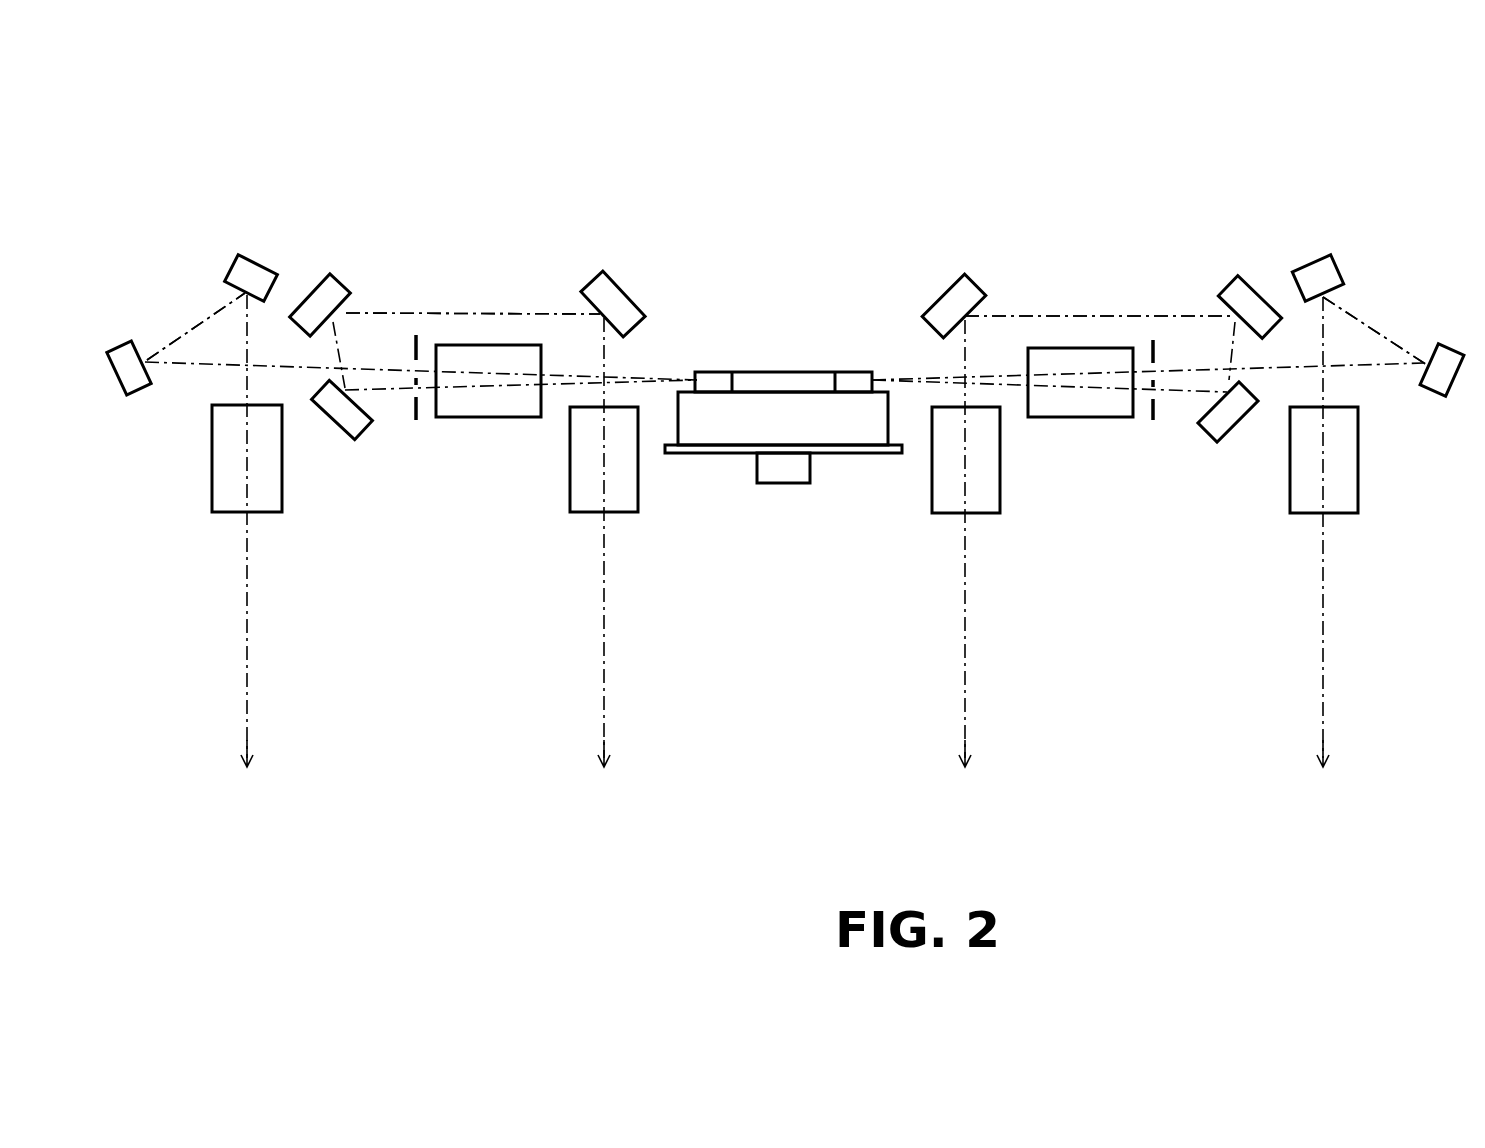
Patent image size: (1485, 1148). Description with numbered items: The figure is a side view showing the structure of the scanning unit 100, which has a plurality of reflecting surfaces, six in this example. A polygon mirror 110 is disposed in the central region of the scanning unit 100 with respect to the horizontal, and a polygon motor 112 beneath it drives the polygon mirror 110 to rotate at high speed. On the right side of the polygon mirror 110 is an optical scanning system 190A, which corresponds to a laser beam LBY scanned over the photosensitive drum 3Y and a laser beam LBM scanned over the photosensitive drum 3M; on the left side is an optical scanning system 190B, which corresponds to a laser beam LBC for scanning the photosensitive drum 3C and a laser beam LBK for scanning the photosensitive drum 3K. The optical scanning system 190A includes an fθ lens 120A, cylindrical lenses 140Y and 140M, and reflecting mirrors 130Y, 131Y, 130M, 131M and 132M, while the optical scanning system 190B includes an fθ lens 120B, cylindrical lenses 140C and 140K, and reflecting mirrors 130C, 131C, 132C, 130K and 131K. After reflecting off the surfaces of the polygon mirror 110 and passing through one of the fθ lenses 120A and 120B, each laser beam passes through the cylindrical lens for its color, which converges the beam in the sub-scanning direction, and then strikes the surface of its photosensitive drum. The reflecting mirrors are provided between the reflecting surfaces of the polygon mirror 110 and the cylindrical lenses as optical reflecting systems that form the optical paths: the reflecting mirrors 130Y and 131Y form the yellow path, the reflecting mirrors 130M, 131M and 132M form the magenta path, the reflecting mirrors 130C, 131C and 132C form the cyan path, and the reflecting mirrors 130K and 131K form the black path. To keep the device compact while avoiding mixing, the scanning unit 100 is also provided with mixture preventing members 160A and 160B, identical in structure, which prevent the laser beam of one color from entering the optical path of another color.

The scanning unit 100 is at (785, 182).
The polygon mirror 110 is at (820, 370).
The polygon motor 112 is at (840, 455).
The fθ lens 120A is at (1100, 405).
The fθ lens 120B is at (489, 405).
The reflecting mirror 130K is at (135, 377).
The reflecting mirror 130C is at (335, 410).
The reflecting mirror 130M is at (1225, 420).
The reflecting mirror 130Y is at (1432, 383).
The reflecting mirror 131K is at (278, 230).
The reflecting mirror 131C is at (330, 295).
The reflecting mirror 131M is at (1240, 297).
The reflecting mirror 131Y is at (1320, 275).
The reflecting mirror 132C is at (615, 298).
The reflecting mirror 132M is at (952, 300).
The cylindrical lens 140K is at (263, 500).
The cylindrical lens 140C is at (620, 500).
The cylindrical lens 140M is at (982, 500).
The cylindrical lens 140Y is at (1340, 500).
The mixture preventing member 160A is at (1160, 340).
The mixture preventing member 160B is at (413, 345).
The optical scanning system 190A is at (1129, 188).
The optical scanning system 190B is at (449, 189).
The laser beam LBK is at (182, 332).
The laser beam LBC is at (510, 313).
The laser beam LBM is at (1010, 315).
The laser beam LBY is at (1358, 318).
The photosensitive drum 3K is at (243, 775).
The photosensitive drum 3C is at (603, 775).
The photosensitive drum 3M is at (965, 775).
The photosensitive drum 3Y is at (1323, 775).